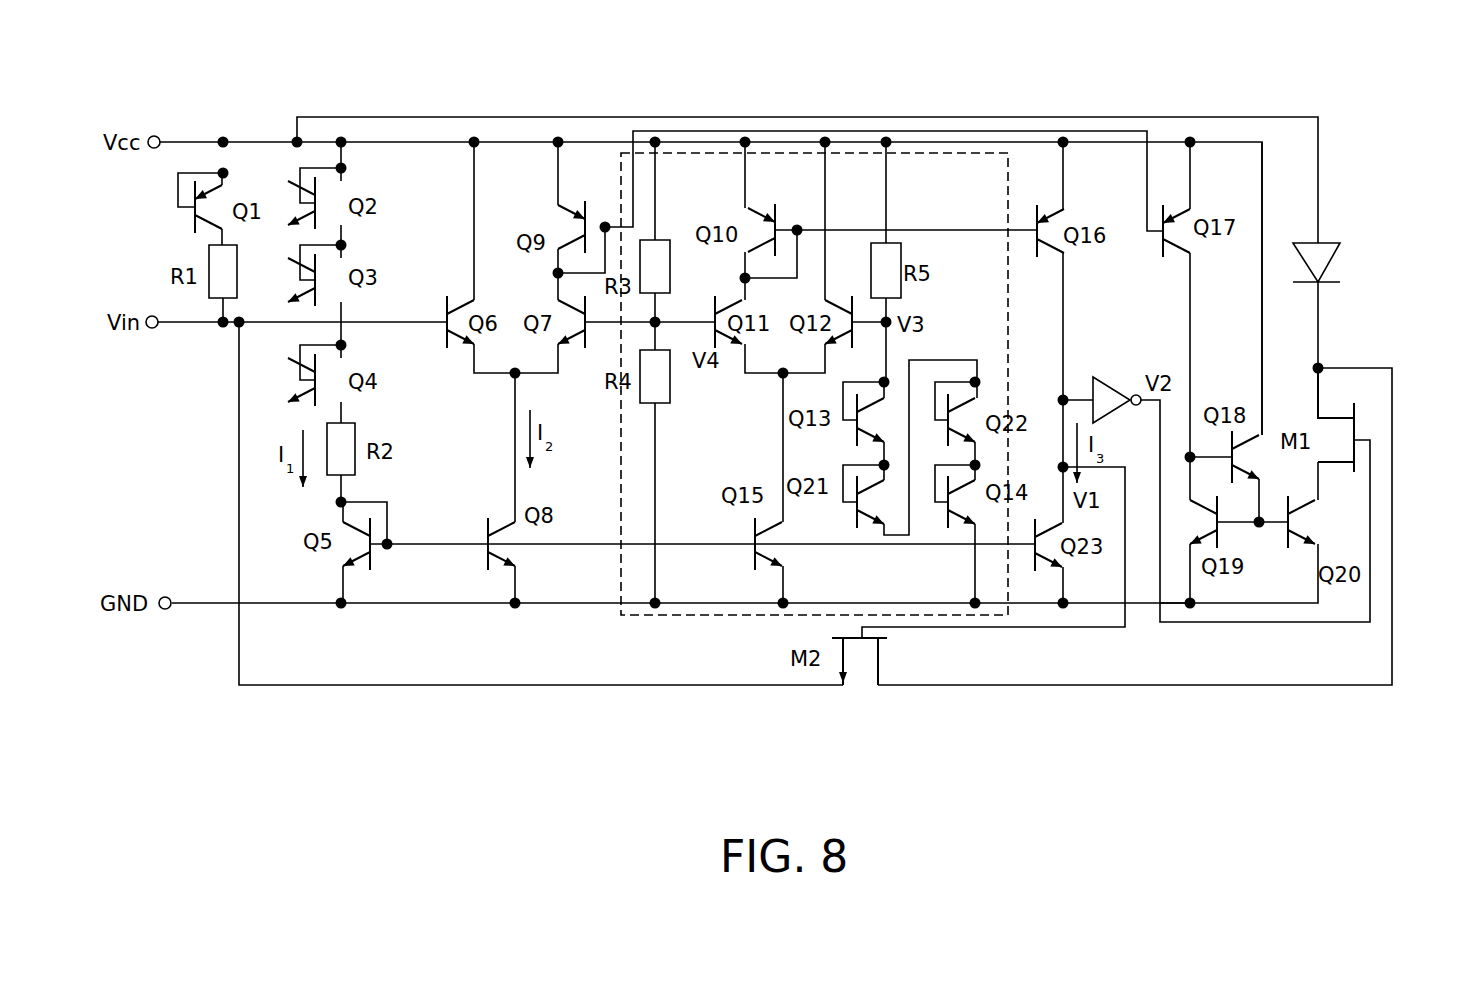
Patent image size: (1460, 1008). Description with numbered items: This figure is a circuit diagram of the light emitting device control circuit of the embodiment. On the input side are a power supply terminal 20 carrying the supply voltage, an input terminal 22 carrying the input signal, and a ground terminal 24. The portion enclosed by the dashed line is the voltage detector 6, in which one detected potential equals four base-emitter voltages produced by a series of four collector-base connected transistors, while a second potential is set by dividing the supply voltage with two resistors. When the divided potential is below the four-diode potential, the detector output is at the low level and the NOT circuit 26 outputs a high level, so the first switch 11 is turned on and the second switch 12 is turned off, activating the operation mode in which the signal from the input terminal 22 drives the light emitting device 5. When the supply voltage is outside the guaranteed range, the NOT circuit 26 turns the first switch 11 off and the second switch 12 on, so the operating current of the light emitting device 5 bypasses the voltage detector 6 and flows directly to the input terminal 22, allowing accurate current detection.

The power supply (Vcc) terminal 20 is at (152, 136).
The input (Vin) terminal 22 is at (148, 316).
The ground (GND) terminal 24 is at (162, 597).
The light emitting device 5 is at (1330, 242).
The NOT circuit 26 is at (1107, 377).
The first switch 11 is at (1342, 430).
The voltage detector 6 is at (740, 617).
The second switch 12 is at (863, 648).